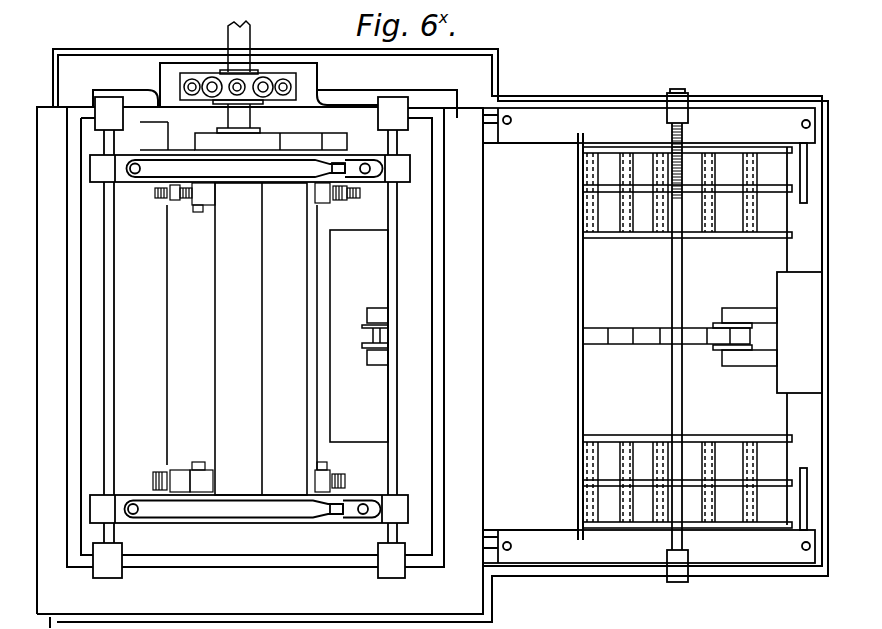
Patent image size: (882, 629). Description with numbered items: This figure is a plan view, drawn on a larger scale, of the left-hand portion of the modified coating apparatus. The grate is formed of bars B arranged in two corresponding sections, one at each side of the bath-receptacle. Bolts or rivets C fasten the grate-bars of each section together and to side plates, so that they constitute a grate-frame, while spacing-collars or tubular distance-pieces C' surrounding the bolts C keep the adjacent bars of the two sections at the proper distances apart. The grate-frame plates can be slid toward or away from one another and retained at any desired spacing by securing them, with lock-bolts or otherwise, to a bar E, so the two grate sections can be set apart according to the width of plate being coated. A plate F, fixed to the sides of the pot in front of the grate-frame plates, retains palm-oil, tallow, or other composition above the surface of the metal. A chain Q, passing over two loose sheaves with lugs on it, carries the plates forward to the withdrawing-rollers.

The plate F is at (533, 336).
The chain Q is at (367, 338).
The bar E is at (685, 382).
The grate bars B is at (620, 192).
The bolts or rivets C is at (681, 350).
The spacing-collars or tubular distance-pieces C' is at (677, 337).